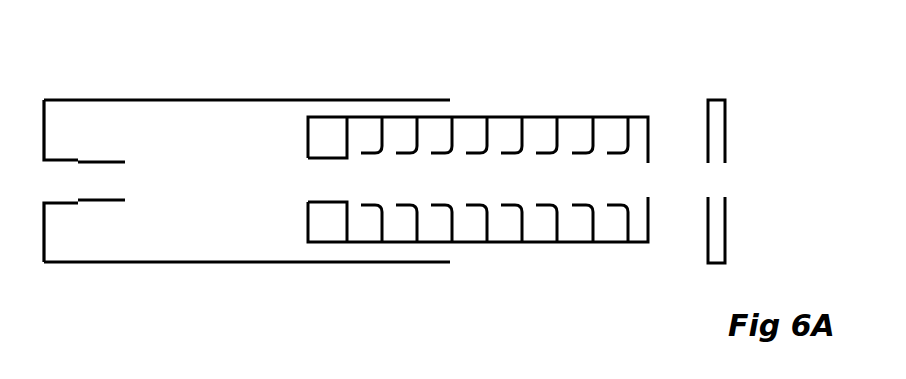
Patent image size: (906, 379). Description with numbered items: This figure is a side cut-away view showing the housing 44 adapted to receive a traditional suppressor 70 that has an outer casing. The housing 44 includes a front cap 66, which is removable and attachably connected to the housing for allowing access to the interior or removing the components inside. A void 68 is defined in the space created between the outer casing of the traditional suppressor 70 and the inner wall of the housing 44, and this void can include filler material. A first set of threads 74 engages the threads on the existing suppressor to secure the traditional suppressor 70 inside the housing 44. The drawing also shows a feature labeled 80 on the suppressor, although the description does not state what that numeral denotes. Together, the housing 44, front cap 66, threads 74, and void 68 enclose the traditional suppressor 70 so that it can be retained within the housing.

The housing 44 is at (230, 100).
The void 68 is at (173, 117).
The first set of threads 74 is at (97, 203).
The traditional suppressor 70 is at (478, 87).
The tooth 80 is at (450, 133).
The front cap 66 is at (718, 100).